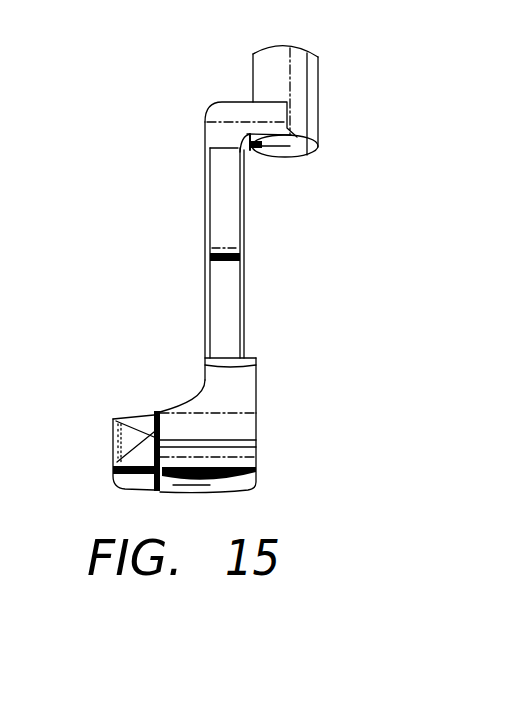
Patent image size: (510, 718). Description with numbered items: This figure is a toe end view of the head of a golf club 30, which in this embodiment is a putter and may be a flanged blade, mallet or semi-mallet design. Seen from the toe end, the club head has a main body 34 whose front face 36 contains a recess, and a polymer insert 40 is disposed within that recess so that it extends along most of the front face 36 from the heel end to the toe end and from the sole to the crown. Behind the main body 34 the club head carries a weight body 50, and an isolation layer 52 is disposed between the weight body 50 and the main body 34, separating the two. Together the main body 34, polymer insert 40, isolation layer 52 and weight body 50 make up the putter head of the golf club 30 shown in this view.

The golf club 30 is at (323, 221).
The body 34 is at (198, 397).
The front face 36 is at (257, 390).
The polymer insert 40 is at (260, 430).
The weight body 50 is at (112, 418).
The isolation layer 52 is at (160, 411).